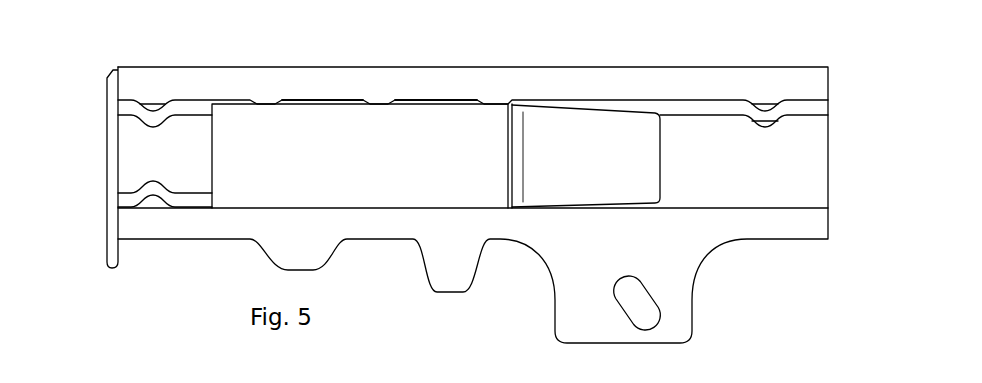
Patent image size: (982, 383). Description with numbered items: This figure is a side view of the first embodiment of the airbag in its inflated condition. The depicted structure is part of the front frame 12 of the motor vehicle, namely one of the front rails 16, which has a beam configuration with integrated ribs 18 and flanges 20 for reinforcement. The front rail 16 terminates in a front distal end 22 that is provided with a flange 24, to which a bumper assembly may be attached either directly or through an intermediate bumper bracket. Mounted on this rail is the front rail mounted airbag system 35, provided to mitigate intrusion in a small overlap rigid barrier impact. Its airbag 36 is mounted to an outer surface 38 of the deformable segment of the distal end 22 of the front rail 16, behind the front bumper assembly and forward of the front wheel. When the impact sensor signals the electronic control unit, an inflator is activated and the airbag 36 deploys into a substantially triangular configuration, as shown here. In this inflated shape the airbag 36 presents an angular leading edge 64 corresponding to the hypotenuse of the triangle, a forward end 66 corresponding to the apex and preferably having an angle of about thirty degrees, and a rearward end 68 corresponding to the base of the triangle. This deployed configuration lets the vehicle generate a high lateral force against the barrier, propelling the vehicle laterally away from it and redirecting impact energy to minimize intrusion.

The front frame 12 is at (795, 233).
The front rail 16 is at (627, 77).
The ribs 18 is at (152, 105).
The flanges 20 is at (797, 77).
The front distal end 22 is at (213, 78).
The flange 24 is at (110, 170).
The front rail mounted airbag system 35 is at (438, 88).
The airbag 36 is at (420, 190).
The outer surface 38 is at (331, 64).
The angular leading edge 64 is at (245, 188).
The forward end 66 is at (220, 165).
The rearward end 68 is at (638, 173).